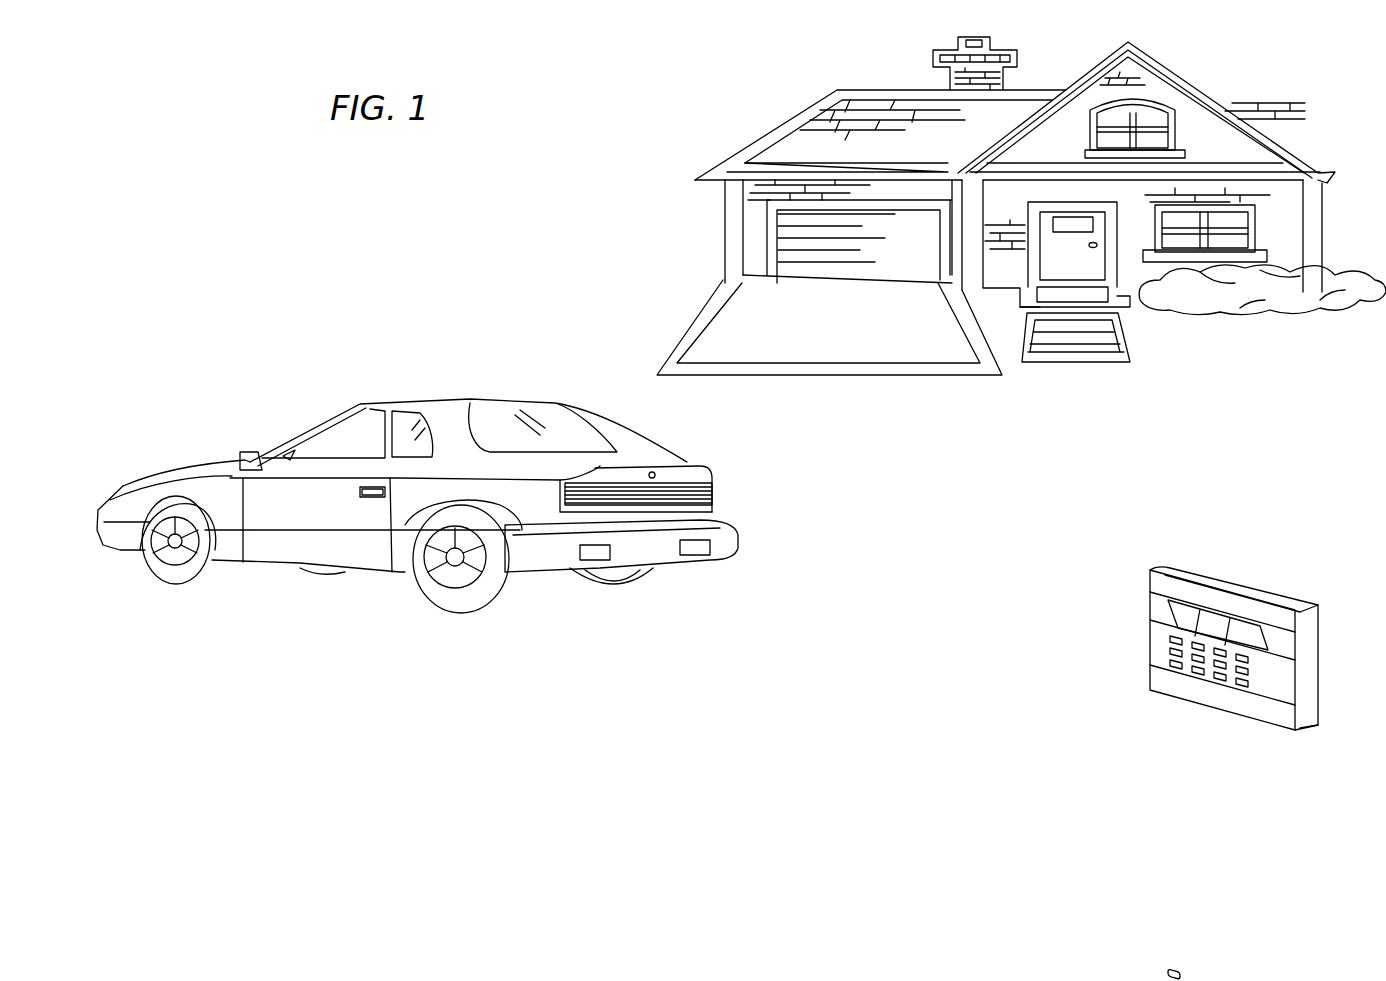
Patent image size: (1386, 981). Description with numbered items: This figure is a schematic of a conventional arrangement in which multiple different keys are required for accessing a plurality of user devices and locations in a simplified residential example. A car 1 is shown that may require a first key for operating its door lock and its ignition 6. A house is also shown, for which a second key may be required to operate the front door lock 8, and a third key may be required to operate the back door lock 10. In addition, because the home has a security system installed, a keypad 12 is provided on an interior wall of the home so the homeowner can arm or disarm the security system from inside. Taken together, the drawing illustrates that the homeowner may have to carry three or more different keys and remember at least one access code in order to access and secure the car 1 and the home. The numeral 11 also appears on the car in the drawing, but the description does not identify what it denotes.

The car 1 is at (267, 542).
The ignition 6 is at (290, 458).
The front door lock 8 is at (1125, 265).
The back door lock 10 is at (1189, 66).
The door lock / handle 11 is at (373, 500).
The keypad 12 is at (1263, 590).